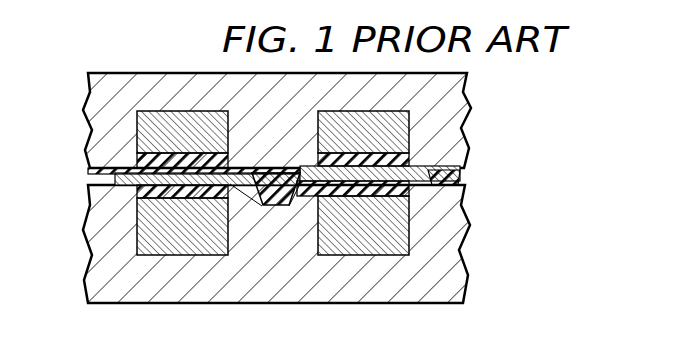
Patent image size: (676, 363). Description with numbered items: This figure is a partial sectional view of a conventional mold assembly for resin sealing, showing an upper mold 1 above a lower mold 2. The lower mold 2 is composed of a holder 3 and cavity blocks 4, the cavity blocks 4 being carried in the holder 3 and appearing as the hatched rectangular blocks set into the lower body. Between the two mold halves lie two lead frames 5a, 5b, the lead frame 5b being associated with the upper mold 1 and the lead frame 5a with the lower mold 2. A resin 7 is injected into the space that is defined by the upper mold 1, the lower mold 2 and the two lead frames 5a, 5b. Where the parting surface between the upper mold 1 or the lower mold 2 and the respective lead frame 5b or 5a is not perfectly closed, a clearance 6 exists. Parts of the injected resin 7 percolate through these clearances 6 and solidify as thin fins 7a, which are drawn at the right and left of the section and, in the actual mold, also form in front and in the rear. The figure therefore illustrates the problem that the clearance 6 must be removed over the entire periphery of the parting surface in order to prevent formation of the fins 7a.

The upper mold 1 is at (470, 122).
The lower mold 2 is at (469, 272).
The holder 3 is at (426, 285).
The cavity blocks 4 is at (193, 255).
The lead frame 5a is at (428, 170).
The lead frame 5b is at (115, 181).
The clearance 6 is at (127, 160).
The resin 7 is at (135, 193).
The fins 7a is at (90, 172).